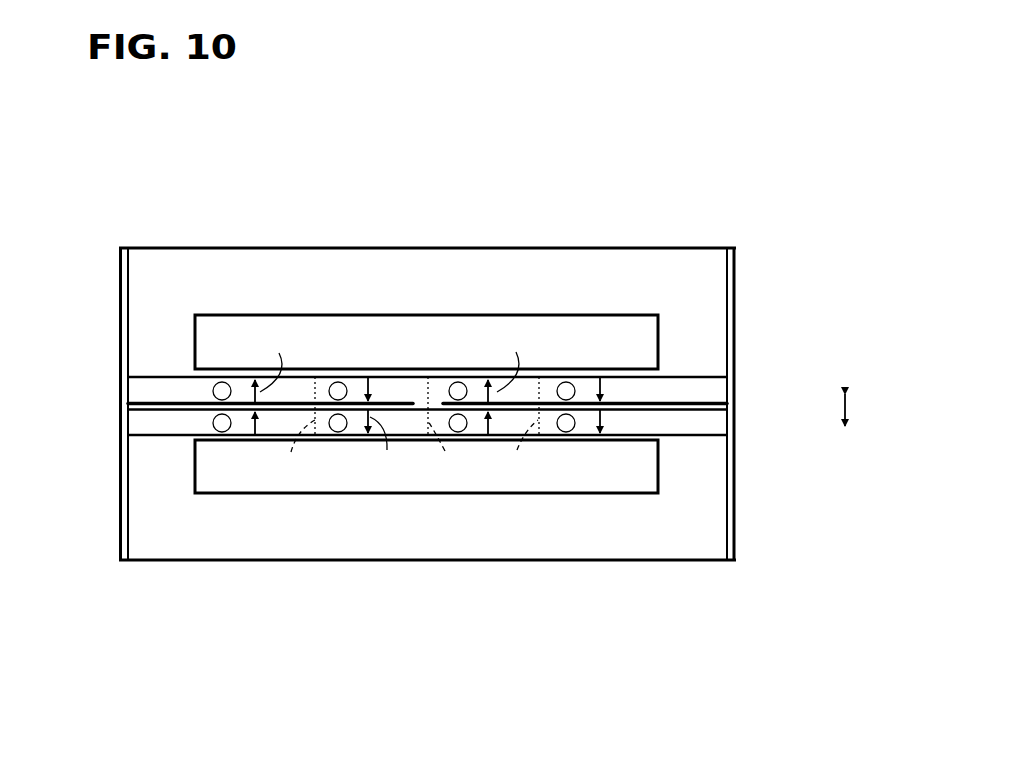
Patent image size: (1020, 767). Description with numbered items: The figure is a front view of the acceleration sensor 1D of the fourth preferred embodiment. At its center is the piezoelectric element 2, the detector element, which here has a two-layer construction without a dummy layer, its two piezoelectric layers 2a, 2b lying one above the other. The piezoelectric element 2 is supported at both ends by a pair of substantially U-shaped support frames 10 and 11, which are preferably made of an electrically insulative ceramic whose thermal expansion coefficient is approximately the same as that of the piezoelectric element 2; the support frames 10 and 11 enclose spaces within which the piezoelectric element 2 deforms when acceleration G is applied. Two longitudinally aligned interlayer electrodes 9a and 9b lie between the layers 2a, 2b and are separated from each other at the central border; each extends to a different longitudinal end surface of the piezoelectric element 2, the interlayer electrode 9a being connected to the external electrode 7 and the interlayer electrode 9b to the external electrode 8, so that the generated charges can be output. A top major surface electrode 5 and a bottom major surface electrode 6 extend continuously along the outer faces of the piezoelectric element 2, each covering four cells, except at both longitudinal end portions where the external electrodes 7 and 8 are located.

The acceleration sensor 1D is at (609, 220).
The piezoelectric element 2 is at (42, 378).
The upper mover plate 2a is at (135, 395).
The lower mover plate 2b is at (135, 427).
The top major surface electrode 5 is at (394, 369).
The bottom major surface electrode 6 is at (350, 442).
The external electrode 7 is at (119, 278).
The external electrode 8 is at (735, 272).
The interlayer electrode 9a is at (167, 405).
The interlayer electrode 9b is at (703, 400).
The support frame 10 is at (497, 268).
The support frame 11 is at (457, 540).